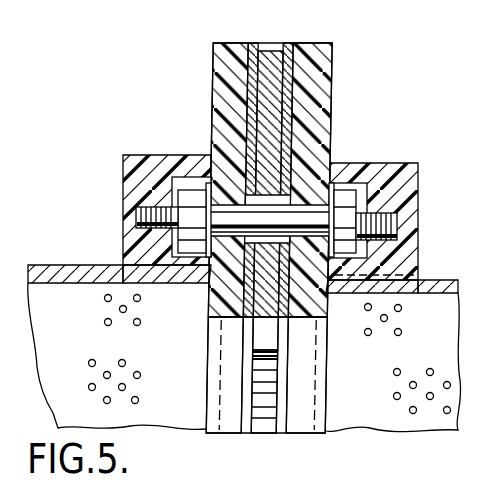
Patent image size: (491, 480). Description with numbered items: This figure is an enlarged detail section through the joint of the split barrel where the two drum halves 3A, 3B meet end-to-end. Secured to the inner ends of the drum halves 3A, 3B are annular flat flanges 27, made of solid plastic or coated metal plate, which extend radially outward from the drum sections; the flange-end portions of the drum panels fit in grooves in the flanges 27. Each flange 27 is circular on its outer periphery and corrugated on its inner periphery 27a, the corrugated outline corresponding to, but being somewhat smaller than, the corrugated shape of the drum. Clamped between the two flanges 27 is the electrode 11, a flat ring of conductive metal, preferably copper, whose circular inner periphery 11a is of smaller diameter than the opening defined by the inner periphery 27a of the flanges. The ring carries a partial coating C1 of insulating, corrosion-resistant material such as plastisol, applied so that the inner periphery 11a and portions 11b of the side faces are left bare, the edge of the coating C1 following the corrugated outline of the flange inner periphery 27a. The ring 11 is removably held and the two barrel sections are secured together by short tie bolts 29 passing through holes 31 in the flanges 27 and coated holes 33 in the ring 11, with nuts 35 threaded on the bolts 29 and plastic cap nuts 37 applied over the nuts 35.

The coating C1 is at (279, 44).
The annular flat flange 27 is at (218, 56).
The inner periphery of flange 27a is at (240, 318).
The electrode 11 is at (294, 85).
The inner periphery of electrode ring 11a is at (258, 368).
The bare portions of side faces 11b is at (259, 336).
The tie bolt 29 is at (136, 219).
The hole in flange 31 is at (216, 160).
The coated hole in ring 33 is at (217, 291).
The nut 35 is at (123, 258).
The plastic cap nut 37 is at (124, 182).
The half of drum 3A is at (46, 258).
The other half of drum 3B is at (450, 270).